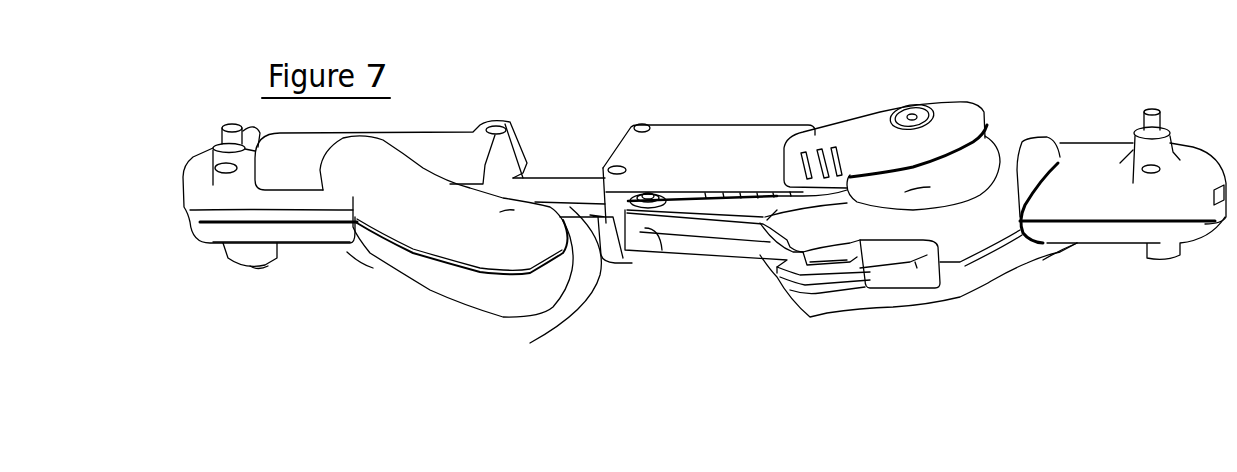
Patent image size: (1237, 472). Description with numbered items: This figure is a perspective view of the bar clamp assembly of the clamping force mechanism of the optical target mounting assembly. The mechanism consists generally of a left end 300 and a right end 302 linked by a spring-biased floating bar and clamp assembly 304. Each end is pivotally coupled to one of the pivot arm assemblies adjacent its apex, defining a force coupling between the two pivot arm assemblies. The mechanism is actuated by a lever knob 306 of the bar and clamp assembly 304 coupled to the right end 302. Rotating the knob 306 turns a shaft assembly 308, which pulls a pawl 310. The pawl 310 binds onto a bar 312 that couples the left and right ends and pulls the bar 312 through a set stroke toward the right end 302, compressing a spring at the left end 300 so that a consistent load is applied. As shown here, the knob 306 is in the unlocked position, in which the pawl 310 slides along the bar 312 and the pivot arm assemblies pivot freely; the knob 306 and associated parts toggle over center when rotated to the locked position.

The left end 300 is at (401, 291).
The right end 302 is at (1060, 267).
The spring-biased floating bar and clamp assembly 304 is at (557, 183).
The lever knob 306 is at (867, 125).
The shaft assembly 308 is at (750, 242).
The pawl 310 is at (682, 218).
The bar 312 is at (536, 285).